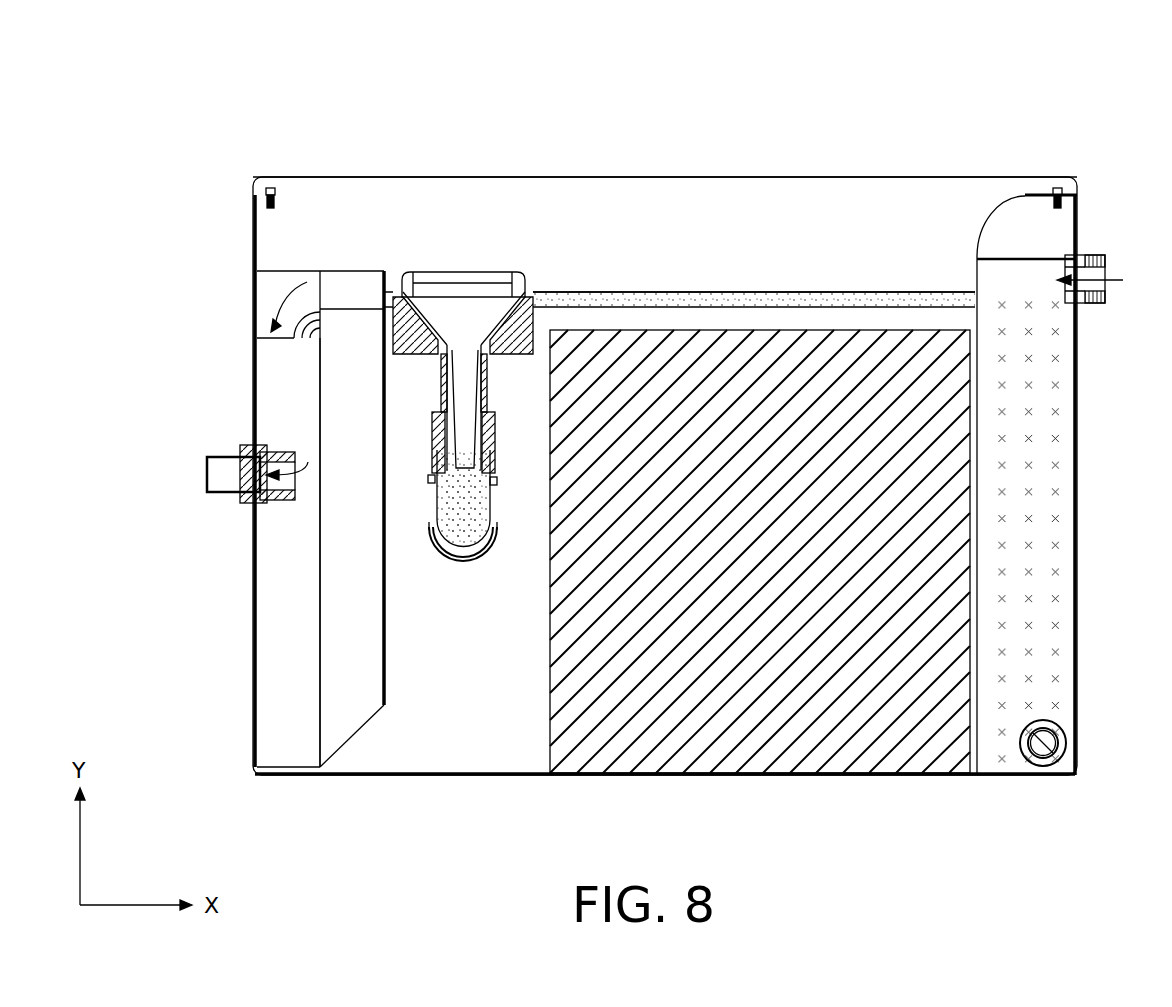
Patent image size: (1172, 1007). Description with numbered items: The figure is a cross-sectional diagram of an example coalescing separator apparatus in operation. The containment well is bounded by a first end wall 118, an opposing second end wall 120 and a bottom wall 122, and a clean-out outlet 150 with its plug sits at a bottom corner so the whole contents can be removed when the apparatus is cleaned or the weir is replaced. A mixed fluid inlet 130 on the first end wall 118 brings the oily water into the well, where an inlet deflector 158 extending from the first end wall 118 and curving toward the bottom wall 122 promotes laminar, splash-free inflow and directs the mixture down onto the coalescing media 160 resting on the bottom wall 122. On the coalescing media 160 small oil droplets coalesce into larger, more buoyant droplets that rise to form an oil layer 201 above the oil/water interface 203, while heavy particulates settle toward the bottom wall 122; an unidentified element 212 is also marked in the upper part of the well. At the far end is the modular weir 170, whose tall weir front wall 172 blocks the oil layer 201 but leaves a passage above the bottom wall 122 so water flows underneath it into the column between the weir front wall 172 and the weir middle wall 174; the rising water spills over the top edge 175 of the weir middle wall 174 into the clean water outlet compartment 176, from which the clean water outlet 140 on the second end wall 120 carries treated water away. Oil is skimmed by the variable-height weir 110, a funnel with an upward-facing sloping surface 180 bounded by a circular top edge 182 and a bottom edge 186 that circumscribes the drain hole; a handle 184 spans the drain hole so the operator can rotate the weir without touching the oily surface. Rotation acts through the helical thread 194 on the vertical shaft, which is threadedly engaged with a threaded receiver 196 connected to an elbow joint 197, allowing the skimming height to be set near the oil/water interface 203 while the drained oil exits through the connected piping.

The variable-height weir 110 is at (496, 113).
The first end wall 118 is at (1079, 497).
The second end wall 120 is at (253, 768).
The bottom wall 122 is at (652, 776).
The mixed fluid inlet 130 is at (1092, 303).
The clean water outlet 140 is at (237, 471).
The clean-out outlet 150 is at (1062, 732).
The inlet deflector 158 is at (980, 240).
The coalescing media 160 is at (803, 745).
The modular weir 170 is at (347, 206).
The weir front wall 172 is at (385, 675).
The weir middle wall 174 is at (322, 720).
The top edge 175 is at (320, 270).
The clean water outlet compartment 176 is at (357, 299).
The upward-facing sloping surface 180 is at (437, 313).
The top edge 182 is at (393, 297).
The handle 184 is at (495, 268).
The bottom edge 186 is at (468, 352).
The helical thread 194 is at (493, 430).
The threaded receiver 196 is at (432, 477).
The elbow joint 197 is at (470, 553).
The oil layer 201 is at (703, 296).
The oil/water interface 203 is at (622, 302).
The headspace 212 is at (835, 222).